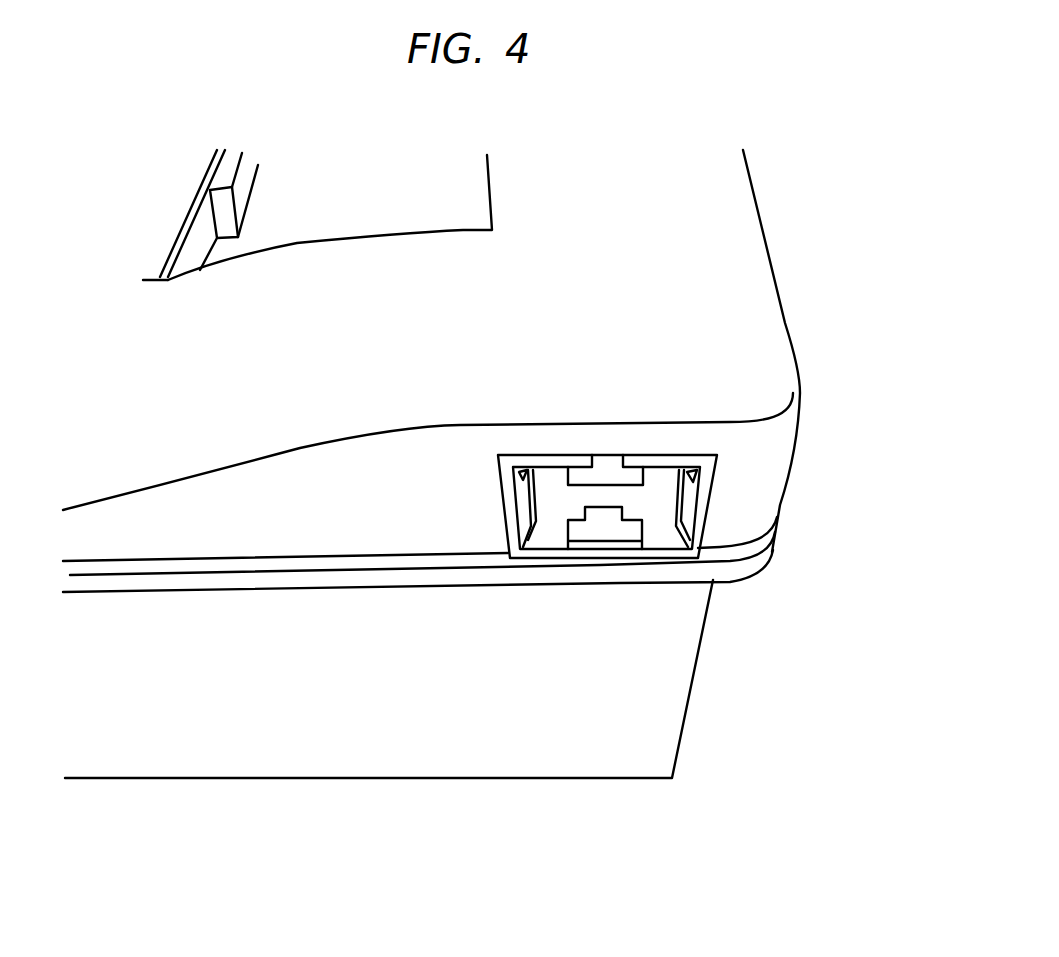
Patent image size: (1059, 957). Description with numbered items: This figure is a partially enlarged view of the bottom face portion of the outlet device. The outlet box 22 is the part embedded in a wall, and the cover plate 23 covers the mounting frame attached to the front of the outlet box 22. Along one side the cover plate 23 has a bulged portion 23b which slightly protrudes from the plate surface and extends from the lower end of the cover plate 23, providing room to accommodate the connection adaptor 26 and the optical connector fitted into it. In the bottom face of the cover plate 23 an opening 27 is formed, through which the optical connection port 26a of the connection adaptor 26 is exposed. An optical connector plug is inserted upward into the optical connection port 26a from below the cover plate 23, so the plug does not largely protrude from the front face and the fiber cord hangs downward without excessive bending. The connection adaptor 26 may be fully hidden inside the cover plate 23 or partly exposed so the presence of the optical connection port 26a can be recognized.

The outlet box 22 is at (658, 700).
The cover plate 23 is at (392, 573).
The bulged portion 23b is at (753, 332).
The connection adaptor 26 is at (515, 525).
The optical connection port 26a is at (562, 508).
The opening 27 is at (600, 455).